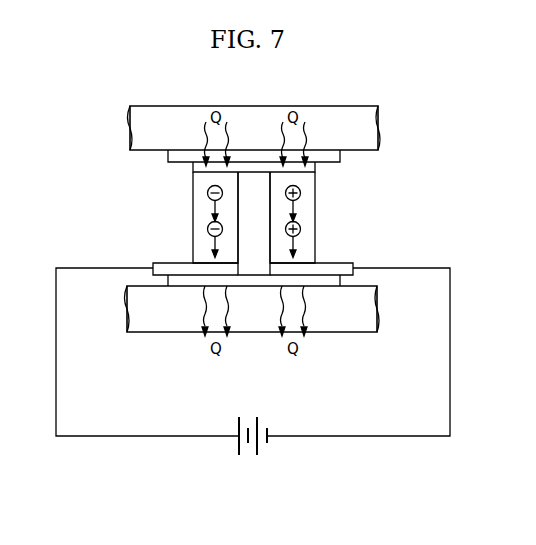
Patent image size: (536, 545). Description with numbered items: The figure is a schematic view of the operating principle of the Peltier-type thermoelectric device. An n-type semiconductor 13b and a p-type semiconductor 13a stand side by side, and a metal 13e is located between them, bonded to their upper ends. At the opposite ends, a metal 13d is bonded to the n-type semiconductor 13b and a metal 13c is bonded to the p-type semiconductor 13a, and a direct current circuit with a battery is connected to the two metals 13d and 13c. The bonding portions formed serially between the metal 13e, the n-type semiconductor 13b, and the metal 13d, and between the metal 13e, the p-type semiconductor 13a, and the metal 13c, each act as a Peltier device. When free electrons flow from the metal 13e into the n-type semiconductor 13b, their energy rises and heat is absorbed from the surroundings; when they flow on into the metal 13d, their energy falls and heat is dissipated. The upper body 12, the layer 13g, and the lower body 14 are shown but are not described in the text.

The upper substrate / heat source 12 is at (370, 128).
The upper electrode plate 13g is at (340, 160).
The metal 13e is at (315, 168).
The n-type semiconductor 13b is at (193, 209).
The p-type semiconductor 13a is at (315, 210).
The metal 13d is at (167, 263).
The metal 13c is at (339, 263).
The lower substrate / heat sink 14 is at (377, 309).